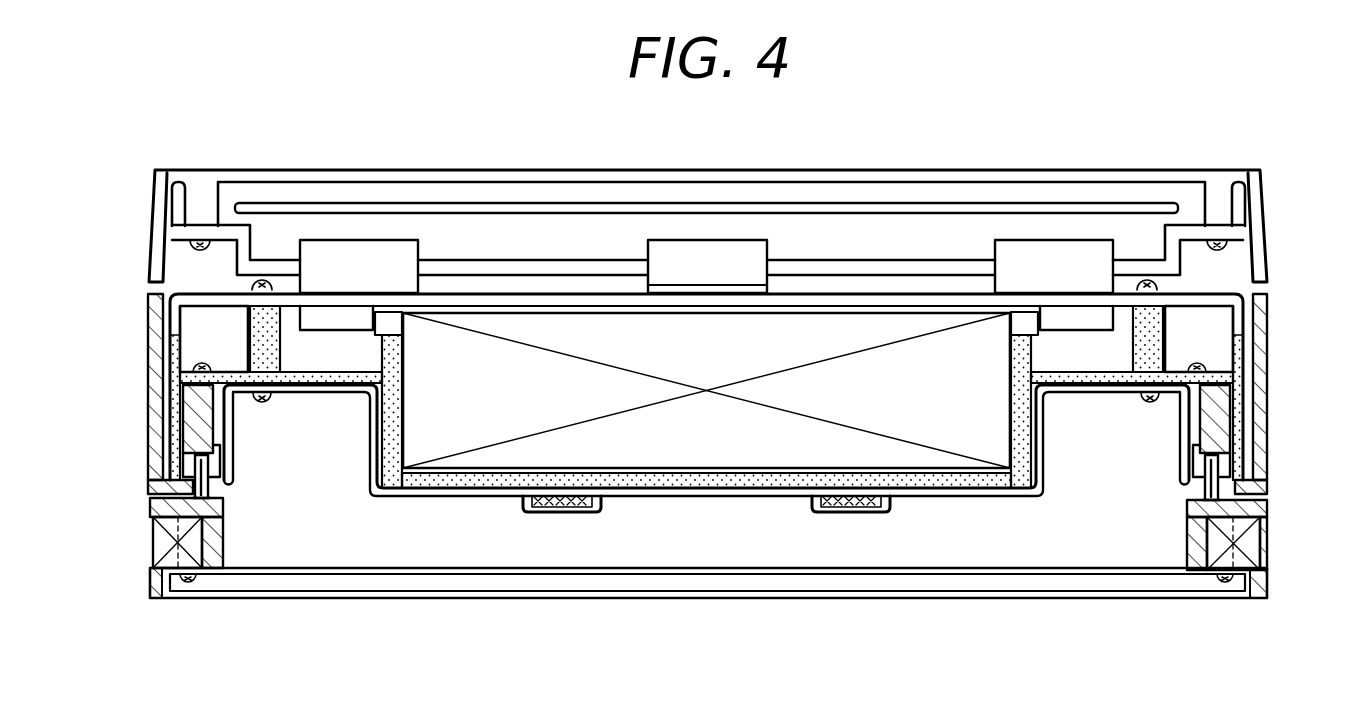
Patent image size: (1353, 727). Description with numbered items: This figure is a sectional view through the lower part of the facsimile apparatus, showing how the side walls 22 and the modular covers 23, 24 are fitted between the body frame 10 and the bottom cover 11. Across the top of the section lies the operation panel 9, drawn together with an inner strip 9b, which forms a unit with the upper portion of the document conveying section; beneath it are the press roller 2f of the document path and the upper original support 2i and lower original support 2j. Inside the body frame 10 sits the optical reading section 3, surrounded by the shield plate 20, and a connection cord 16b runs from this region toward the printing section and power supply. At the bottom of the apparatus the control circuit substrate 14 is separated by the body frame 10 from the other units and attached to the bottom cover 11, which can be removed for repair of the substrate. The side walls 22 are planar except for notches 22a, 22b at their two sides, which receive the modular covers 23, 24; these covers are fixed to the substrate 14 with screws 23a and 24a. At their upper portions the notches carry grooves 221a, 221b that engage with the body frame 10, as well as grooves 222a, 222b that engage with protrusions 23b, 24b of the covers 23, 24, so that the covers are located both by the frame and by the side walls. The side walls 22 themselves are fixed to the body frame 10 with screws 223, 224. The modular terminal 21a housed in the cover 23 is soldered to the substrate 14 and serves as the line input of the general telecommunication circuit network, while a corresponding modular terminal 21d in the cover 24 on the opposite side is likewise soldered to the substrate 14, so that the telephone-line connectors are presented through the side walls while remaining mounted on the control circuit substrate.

The operation panel 9 is at (1150, 172).
The lid inner strip 9b is at (585, 203).
The press roller 2f is at (724, 244).
The upper original support 2i is at (1183, 232).
The lower original support 2j is at (200, 298).
The screw 223 is at (212, 365).
The screw 224 is at (1200, 365).
The body frame 10 is at (948, 485).
The optical reading section 3 is at (683, 445).
The shield plate 20 is at (760, 495).
The connection cord 16b is at (870, 508).
The side wall 22 is at (1262, 378).
The notch 22a is at (150, 488).
The notch 22b is at (1268, 490).
The groove 221a is at (190, 432).
The groove 221b is at (1228, 430).
The groove 222a is at (215, 470).
The groove 222b is at (1195, 488).
The modular cover 23 is at (150, 510).
The screw 23a is at (188, 582).
The protrusion 23b is at (212, 495).
The modular cover 24 is at (1255, 510).
The screw 24a is at (1226, 582).
The protrusion 24b is at (1205, 495).
The modular terminal 21a is at (153, 545).
The right bushing 21d is at (1262, 545).
The control circuit substrate 14 is at (427, 575).
The bottom cover 11 is at (566, 597).